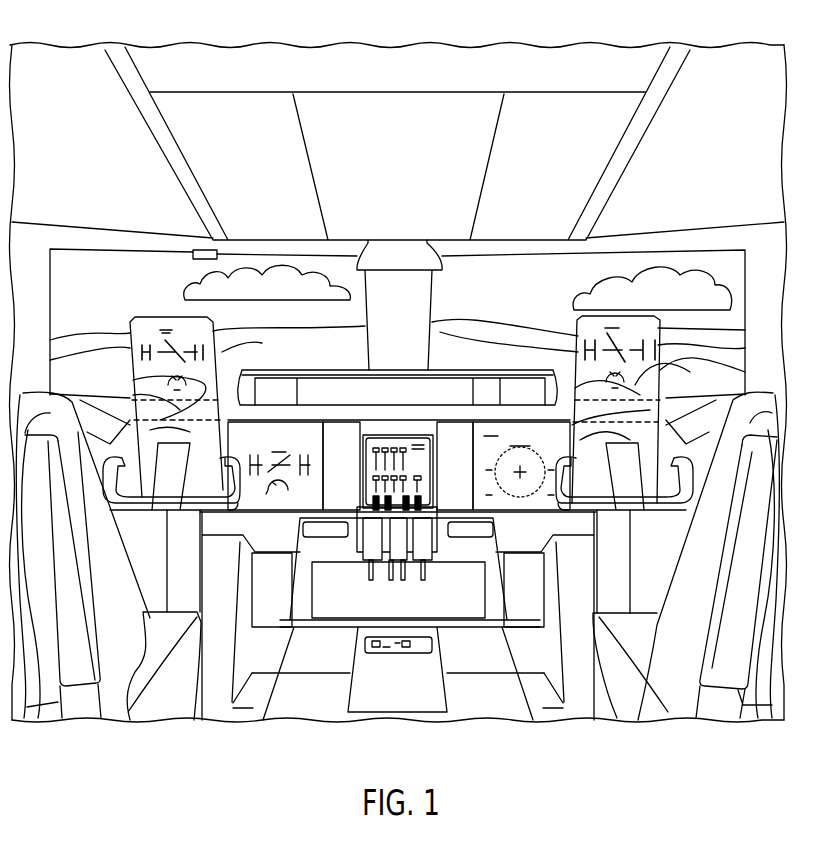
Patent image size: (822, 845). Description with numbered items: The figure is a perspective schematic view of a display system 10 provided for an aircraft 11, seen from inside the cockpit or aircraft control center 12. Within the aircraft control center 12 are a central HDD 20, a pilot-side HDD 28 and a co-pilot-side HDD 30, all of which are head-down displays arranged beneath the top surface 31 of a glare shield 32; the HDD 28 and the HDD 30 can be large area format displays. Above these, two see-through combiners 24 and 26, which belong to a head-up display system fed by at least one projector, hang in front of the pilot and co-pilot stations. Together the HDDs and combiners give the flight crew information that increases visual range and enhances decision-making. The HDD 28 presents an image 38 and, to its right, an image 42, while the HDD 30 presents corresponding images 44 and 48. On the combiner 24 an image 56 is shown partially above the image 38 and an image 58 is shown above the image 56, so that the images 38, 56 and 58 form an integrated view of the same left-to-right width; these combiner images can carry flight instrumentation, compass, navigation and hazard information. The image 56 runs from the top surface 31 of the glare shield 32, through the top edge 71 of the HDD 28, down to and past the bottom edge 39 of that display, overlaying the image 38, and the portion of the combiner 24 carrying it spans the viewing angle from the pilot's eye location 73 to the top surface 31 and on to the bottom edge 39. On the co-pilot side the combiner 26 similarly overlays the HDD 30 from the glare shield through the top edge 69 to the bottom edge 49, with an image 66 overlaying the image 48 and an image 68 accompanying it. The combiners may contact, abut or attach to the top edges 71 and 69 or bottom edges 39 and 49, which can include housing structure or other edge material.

The display system 10 is at (400, 312).
The aircraft 11 is at (645, 45).
The aircraft control center 12 is at (648, 205).
The HDD 20 is at (418, 445).
The combiner 24 is at (184, 385).
The combiner 26 is at (615, 378).
The HDD 28 is at (328, 435).
The HDD 30 is at (471, 436).
The top surface 31 is at (215, 398).
The glare shield 32 is at (87, 397).
The image 38 is at (216, 492).
The bottom edge 39 is at (215, 510).
The image 42 is at (302, 432).
The image 44 is at (490, 432).
The image 48 is at (585, 490).
The bottom edge 49 is at (578, 506).
The image 56 is at (148, 413).
The image 58 is at (200, 330).
The image 66 is at (668, 405).
The image 68 is at (590, 310).
The top edge 69 is at (593, 429).
The top edge 71 is at (210, 428).
The pilot's eye location 73 is at (46, 310).